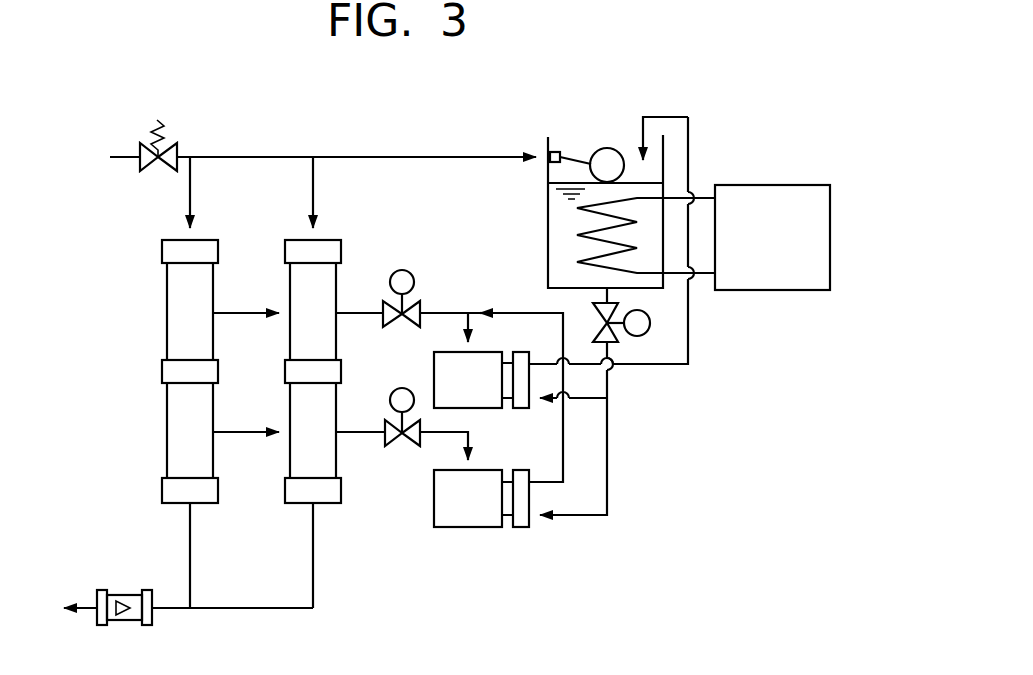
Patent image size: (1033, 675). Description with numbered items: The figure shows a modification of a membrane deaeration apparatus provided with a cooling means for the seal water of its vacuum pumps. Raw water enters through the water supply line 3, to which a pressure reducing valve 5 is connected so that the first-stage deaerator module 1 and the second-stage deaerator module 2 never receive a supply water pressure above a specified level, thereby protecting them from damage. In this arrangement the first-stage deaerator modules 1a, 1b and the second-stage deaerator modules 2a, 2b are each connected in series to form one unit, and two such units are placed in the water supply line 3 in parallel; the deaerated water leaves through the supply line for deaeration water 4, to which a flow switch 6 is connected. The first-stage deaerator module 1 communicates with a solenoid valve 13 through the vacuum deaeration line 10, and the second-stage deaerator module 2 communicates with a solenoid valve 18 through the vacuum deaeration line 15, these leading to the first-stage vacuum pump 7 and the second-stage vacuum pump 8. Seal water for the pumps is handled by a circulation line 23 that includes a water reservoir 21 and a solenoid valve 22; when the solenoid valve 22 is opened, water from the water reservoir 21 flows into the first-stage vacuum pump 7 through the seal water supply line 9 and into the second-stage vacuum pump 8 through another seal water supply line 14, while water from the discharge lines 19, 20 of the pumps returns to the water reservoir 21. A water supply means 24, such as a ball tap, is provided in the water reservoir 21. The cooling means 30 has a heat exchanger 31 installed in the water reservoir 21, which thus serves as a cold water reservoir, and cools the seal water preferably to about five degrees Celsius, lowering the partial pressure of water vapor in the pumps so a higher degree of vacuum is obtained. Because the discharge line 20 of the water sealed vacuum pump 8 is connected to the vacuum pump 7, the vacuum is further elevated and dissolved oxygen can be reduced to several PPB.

The first-stage deaerator module 1 is at (172, 232).
The first-stage deaerator module 1a is at (190, 311).
The first-stage deaerator module 1b is at (313, 311).
The second-stage deaerator module 2 is at (168, 508).
The second-stage deaerator module 2a is at (190, 430).
The second-stage deaerator module 2b is at (313, 430).
The water supply line 3 is at (122, 156).
The supply line for deaeration water 4 is at (235, 609).
The pressure reducing valve 5 is at (157, 120).
The flow switch 6 is at (120, 621).
The first-stage vacuum pump 7 is at (487, 342).
The second-stage vacuum pump 8 is at (470, 540).
The seal water supply line 9 is at (560, 400).
The vacuum deaeration line 10 is at (230, 314).
The solenoid valve 13 is at (404, 270).
The seal water supply line 14 is at (578, 516).
The vacuum deaeration line 15 is at (230, 433).
The solenoid valve 18 is at (400, 388).
The discharge line 19 is at (548, 362).
The discharge line 20 is at (563, 447).
The water reservoir 21 is at (546, 216).
The solenoid valve 22 is at (650, 323).
The circulation line 23 is at (684, 385).
The water supply means 24 is at (572, 158).
The cooling means 30 is at (780, 175).
The heat exchanger 31 is at (652, 195).